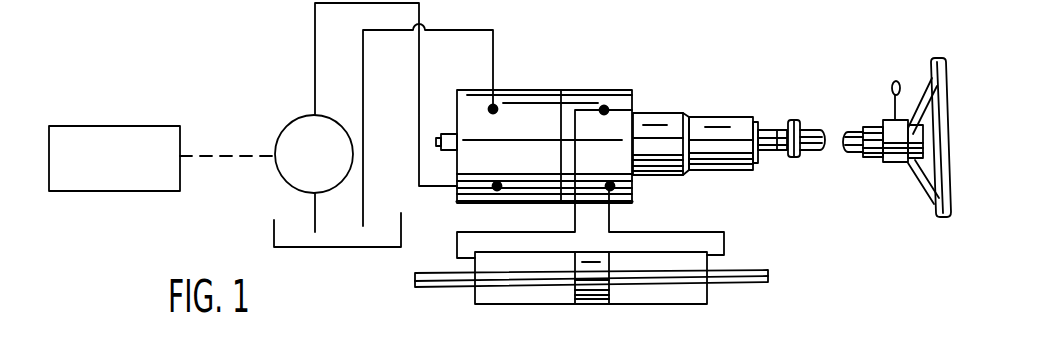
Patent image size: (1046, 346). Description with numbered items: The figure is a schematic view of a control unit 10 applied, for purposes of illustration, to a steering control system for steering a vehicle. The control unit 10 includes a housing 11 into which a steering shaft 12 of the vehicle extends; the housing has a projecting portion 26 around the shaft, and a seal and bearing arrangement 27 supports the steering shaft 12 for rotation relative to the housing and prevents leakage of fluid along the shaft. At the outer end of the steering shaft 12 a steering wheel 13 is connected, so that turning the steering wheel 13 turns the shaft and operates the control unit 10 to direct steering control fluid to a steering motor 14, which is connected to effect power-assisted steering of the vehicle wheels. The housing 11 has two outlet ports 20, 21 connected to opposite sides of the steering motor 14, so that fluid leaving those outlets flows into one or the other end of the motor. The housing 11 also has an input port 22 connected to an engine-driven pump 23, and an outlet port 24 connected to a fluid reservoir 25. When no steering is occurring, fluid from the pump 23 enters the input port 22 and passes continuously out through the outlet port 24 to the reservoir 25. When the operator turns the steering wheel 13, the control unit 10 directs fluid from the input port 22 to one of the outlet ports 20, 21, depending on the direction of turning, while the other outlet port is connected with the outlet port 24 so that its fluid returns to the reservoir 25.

The control unit 10 is at (642, 80).
The housing 11 is at (562, 89).
The steering shaft 12 is at (848, 128).
The steering wheel 13 is at (934, 58).
The steering motor 14 is at (742, 254).
The outlet port 20 is at (604, 108).
The outlet port 21 is at (612, 189).
The input port 22 is at (497, 188).
The engine-driven pump 23 is at (292, 128).
The outlet port 24 is at (493, 108).
The fluid reservoir 25 is at (636, 115).
The projecting portion 26 is at (770, 130).
The seal and bearing arrangement 27 is at (340, 247).